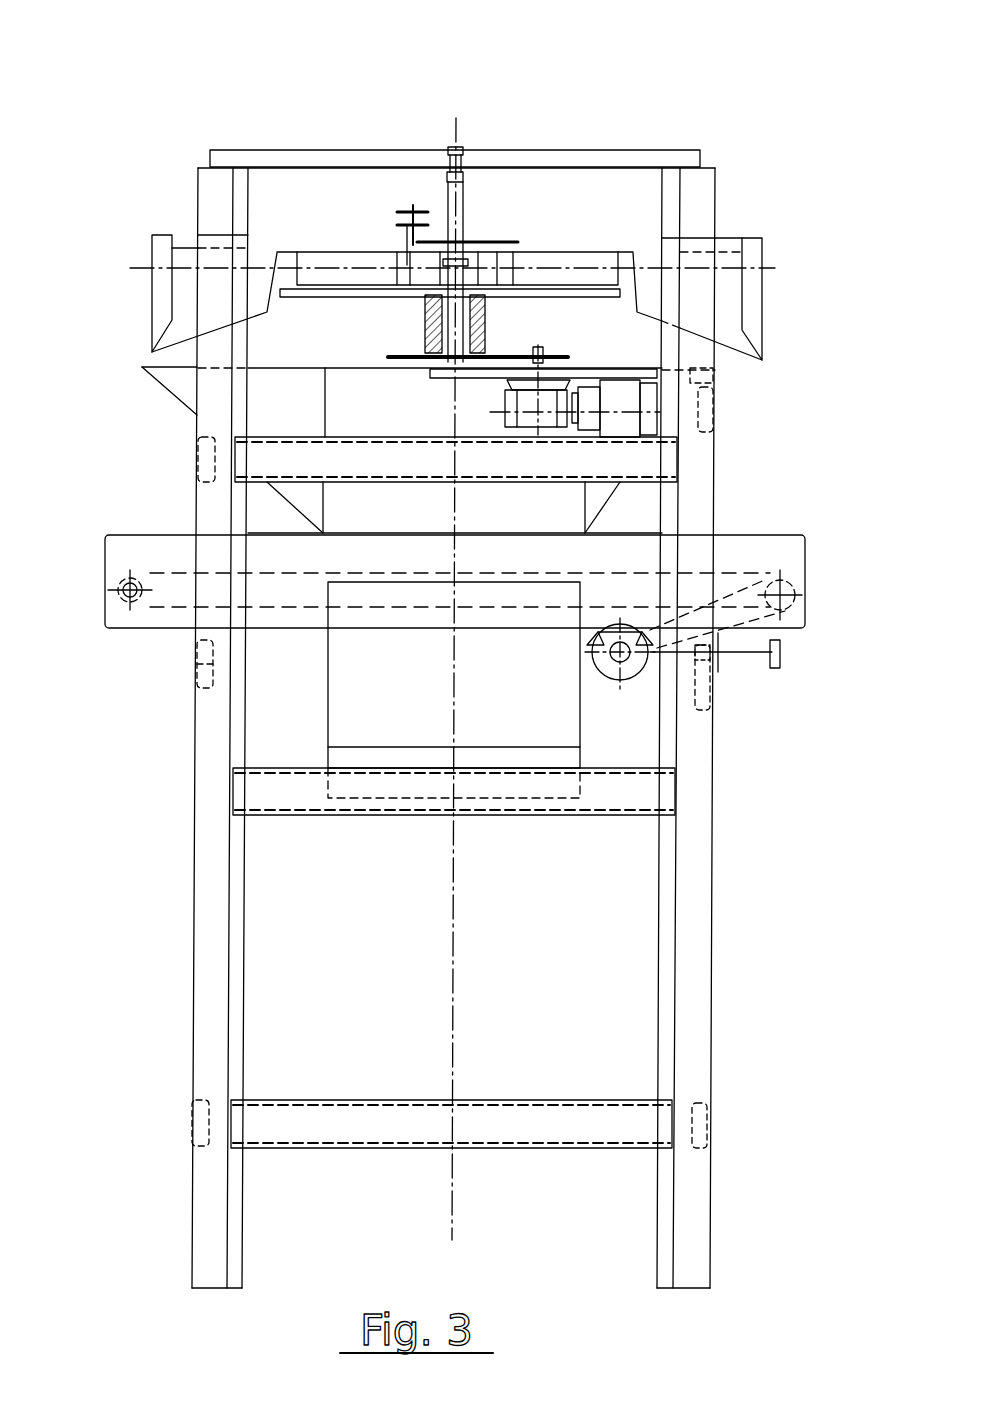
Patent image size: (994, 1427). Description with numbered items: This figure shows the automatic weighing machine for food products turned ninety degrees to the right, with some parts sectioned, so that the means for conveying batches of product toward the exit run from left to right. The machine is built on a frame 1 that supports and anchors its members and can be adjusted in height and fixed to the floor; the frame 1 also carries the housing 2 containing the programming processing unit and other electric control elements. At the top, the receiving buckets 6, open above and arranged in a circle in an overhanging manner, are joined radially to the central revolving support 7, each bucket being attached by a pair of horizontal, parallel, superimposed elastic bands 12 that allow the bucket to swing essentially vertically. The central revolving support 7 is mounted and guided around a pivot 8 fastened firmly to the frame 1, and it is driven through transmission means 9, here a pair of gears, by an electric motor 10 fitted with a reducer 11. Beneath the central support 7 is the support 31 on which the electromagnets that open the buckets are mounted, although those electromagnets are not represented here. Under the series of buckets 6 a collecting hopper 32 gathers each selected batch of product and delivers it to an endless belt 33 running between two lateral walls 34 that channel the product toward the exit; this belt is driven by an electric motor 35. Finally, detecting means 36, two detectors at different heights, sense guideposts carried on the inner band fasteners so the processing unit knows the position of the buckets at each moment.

The frame 1 is at (307, 158).
The housing 2 is at (343, 702).
The bucket 6 is at (183, 298).
The central revolving support 7 is at (403, 297).
The pivot 8 is at (460, 200).
The transmission means 9 is at (525, 356).
The electric motor 10 is at (630, 420).
The reducer 11 is at (512, 416).
The elastic bands 12 is at (342, 250).
The support 31 is at (603, 298).
The collecting hopper 32 is at (267, 402).
The endless belt 33 is at (160, 572).
The lateral walls 34 is at (750, 548).
The electric motor 35 is at (612, 680).
The detecting means 36 is at (421, 217).